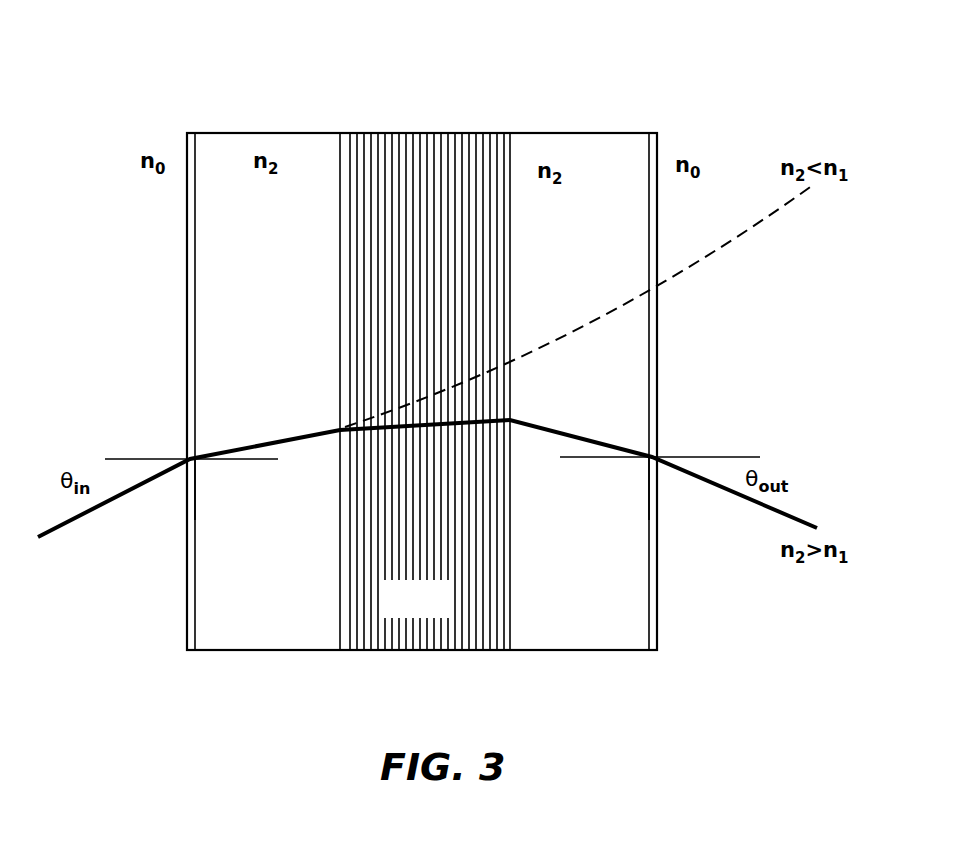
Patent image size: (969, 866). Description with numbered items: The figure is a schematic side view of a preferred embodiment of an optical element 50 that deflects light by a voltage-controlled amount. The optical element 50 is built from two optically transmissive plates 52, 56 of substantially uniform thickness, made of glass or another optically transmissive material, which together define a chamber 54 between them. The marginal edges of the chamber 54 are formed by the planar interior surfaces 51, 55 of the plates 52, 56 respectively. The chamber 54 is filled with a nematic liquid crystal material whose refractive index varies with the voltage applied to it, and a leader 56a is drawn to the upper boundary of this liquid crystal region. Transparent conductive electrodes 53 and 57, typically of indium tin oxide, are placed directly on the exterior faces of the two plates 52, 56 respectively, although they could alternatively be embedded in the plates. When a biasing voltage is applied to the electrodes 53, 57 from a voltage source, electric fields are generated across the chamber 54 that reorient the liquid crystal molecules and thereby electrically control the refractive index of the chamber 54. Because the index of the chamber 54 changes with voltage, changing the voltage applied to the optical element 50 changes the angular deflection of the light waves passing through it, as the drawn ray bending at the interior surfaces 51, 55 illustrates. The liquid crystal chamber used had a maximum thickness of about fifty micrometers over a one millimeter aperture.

The optical element 50 is at (250, 86).
The planar interior surface 51 is at (195, 518).
The optically transmissive plate 52 is at (263, 630).
The transparent conductive electrode 53 is at (190, 618).
The chamber 54 is at (478, 630).
The planar interior surface 55 is at (652, 516).
The optically transmissive plate 56 is at (587, 630).
The alignment layer 56a is at (440, 150).
The transparent conductive electrode 57 is at (655, 605).